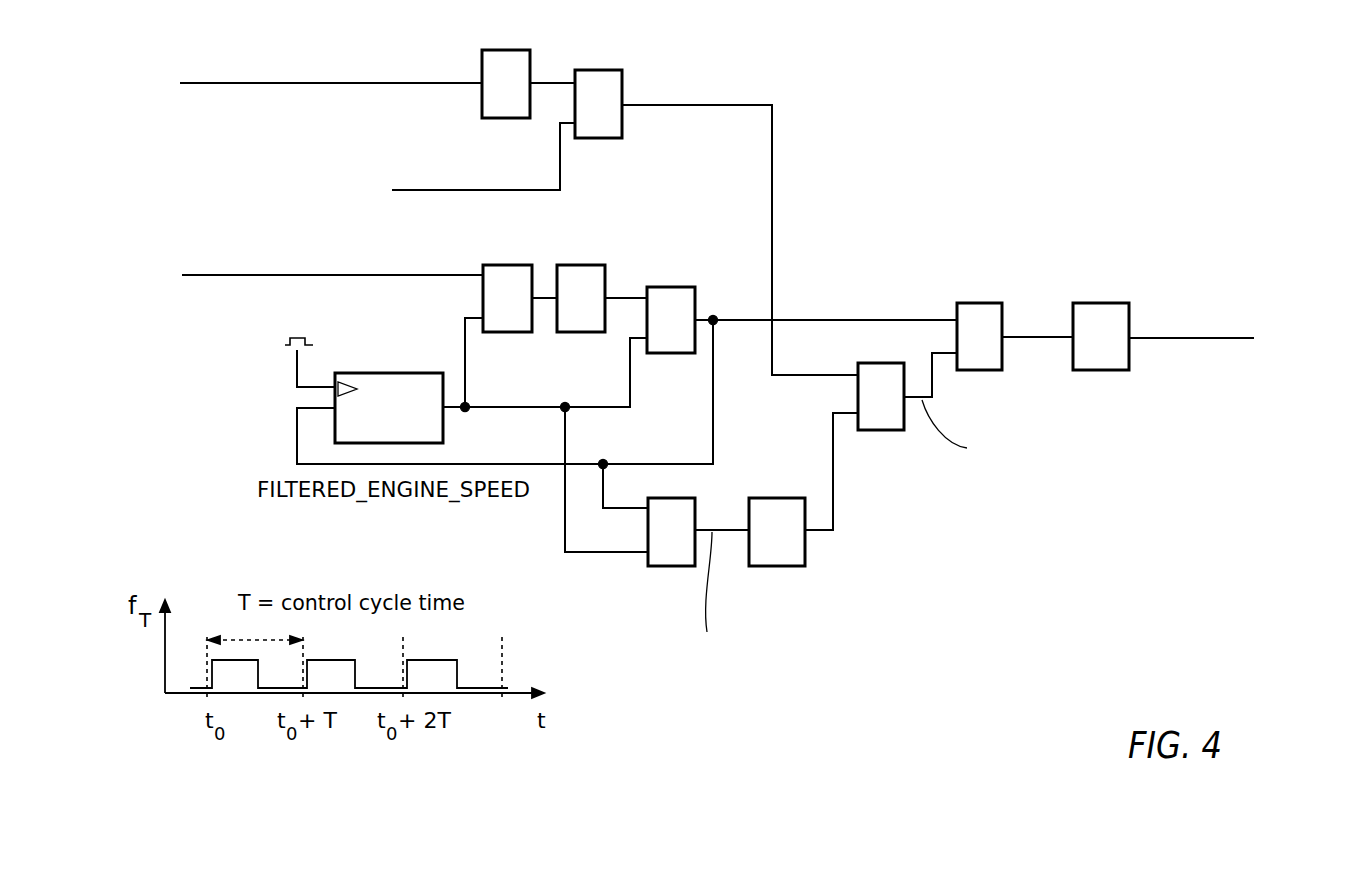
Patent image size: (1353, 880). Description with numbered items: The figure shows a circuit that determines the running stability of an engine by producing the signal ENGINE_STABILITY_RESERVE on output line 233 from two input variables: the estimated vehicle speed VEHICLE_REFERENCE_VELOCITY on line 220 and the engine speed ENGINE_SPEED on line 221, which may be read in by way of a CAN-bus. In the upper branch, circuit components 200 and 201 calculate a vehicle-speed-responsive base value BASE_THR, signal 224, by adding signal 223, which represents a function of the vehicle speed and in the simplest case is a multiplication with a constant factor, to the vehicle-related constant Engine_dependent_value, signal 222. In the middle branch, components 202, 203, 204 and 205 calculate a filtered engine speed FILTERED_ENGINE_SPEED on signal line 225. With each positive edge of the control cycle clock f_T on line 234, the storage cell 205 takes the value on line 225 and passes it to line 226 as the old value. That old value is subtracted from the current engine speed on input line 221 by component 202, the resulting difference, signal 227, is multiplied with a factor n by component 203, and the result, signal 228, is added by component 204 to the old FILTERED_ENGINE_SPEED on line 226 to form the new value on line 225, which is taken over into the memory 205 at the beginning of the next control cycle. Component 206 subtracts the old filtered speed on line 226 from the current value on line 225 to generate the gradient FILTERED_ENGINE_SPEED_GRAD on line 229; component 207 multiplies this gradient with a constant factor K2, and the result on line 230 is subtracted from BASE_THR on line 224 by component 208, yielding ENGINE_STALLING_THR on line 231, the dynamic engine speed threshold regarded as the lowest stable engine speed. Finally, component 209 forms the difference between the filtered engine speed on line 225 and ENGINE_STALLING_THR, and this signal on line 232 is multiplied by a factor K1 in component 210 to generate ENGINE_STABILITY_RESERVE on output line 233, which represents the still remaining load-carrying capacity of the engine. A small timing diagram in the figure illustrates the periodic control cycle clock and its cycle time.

The circuit component 200 is at (510, 50).
The circuit component 201 is at (614, 70).
The component 202 is at (500, 265).
The component 203 is at (578, 265).
The component 204 is at (680, 287).
The storage cell 205 is at (347, 373).
The component 206 is at (665, 567).
The component 207 is at (765, 498).
The component 208 is at (876, 432).
The component 209 is at (972, 303).
The component 210 is at (1100, 303).
The input line 220 is at (294, 83).
The input line 221 is at (232, 275).
The signal 222 is at (440, 190).
The signal 223 is at (542, 82).
The signal 224 is at (752, 105).
The signal line 225 is at (815, 320).
The line 226 is at (607, 410).
The signal 227 is at (547, 300).
The signal 228 is at (617, 298).
The line 229 is at (728, 532).
The line 230 is at (835, 515).
The line 231 is at (938, 393).
The line 232 is at (1017, 337).
The output line 233 is at (1178, 338).
The line 234 is at (297, 375).